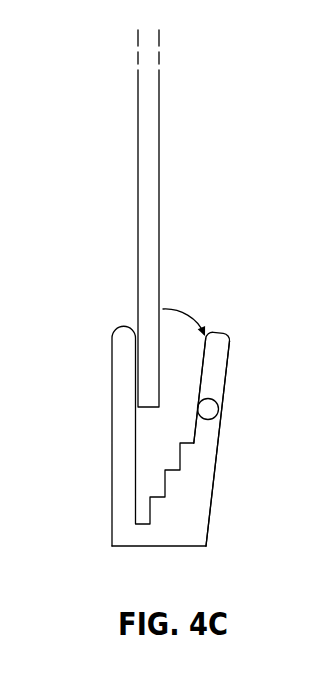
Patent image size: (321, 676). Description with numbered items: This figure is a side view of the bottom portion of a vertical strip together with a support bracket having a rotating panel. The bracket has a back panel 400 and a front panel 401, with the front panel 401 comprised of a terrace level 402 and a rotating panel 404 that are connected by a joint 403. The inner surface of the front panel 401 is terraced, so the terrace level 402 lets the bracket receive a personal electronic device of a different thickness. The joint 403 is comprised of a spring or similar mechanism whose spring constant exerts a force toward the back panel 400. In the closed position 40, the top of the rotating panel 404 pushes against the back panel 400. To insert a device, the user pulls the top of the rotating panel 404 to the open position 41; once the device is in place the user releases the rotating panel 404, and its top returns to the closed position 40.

The closed position 40 is at (162, 306).
The open position 41 is at (209, 331).
The back panel 400 is at (123, 367).
The front panel 401 is at (203, 493).
The terrace level 402 is at (180, 537).
The joint 403 is at (214, 416).
The rotating panel 404 is at (215, 390).